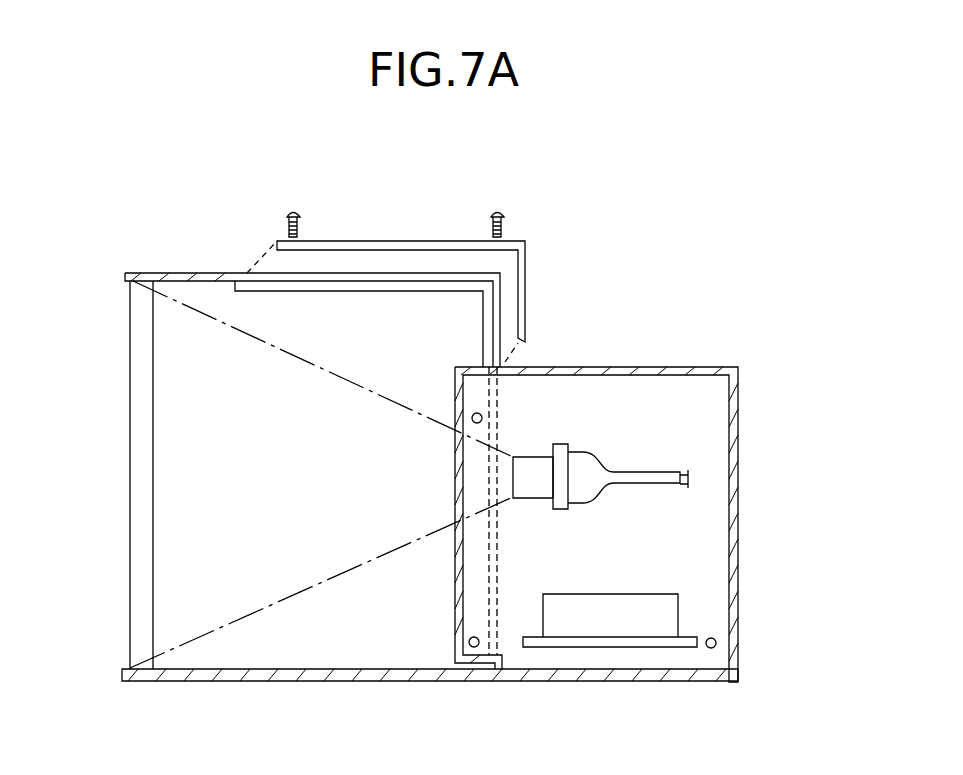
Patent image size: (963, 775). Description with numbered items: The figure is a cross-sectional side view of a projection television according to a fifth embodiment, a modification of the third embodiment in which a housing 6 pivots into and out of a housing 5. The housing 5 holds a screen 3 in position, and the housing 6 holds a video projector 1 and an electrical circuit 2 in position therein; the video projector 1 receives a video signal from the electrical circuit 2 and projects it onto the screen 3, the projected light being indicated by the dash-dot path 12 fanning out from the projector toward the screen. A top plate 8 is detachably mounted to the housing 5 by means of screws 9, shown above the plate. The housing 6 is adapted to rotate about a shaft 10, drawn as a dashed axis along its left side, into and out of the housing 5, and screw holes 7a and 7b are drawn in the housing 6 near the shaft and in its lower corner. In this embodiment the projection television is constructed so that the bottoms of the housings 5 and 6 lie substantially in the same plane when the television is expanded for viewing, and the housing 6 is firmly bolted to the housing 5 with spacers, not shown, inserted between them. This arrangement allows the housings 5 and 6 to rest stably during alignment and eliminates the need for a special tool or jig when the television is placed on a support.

The video projector 1 is at (663, 471).
The electrical circuit 2 is at (641, 593).
The screen 3 is at (128, 458).
The housing 5 is at (178, 272).
The housing 6 is at (628, 366).
The screw hole 7a is at (712, 637).
The screw hole 7b is at (484, 417).
The top plate 8 is at (388, 240).
The screws 9 is at (498, 207).
The shaft 10 is at (468, 641).
The projection light path 12 is at (305, 361).